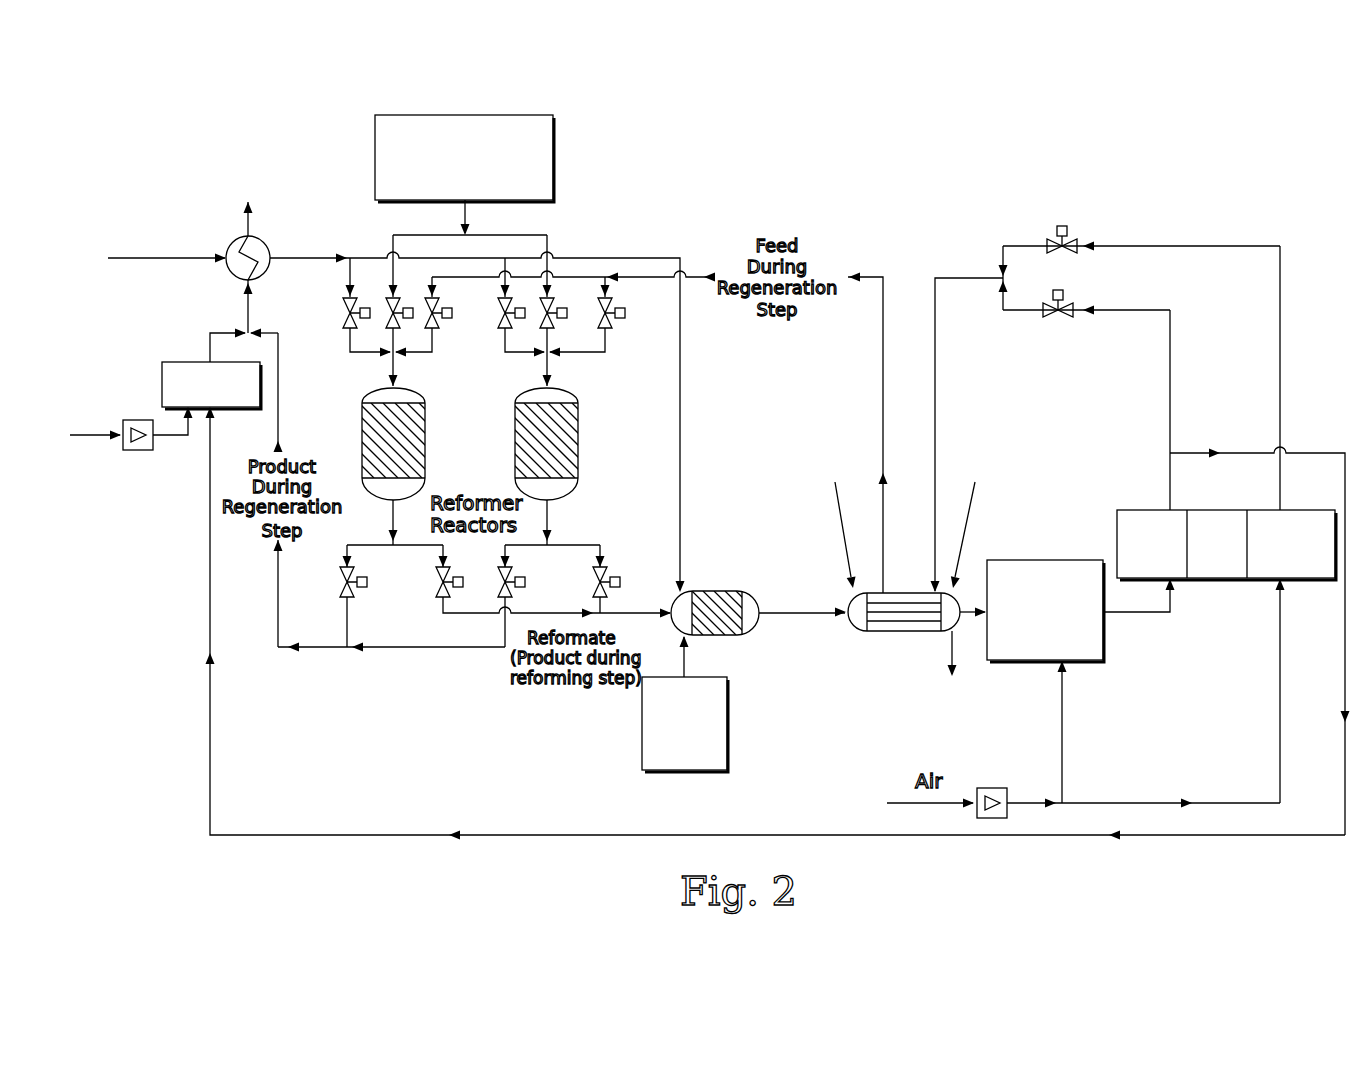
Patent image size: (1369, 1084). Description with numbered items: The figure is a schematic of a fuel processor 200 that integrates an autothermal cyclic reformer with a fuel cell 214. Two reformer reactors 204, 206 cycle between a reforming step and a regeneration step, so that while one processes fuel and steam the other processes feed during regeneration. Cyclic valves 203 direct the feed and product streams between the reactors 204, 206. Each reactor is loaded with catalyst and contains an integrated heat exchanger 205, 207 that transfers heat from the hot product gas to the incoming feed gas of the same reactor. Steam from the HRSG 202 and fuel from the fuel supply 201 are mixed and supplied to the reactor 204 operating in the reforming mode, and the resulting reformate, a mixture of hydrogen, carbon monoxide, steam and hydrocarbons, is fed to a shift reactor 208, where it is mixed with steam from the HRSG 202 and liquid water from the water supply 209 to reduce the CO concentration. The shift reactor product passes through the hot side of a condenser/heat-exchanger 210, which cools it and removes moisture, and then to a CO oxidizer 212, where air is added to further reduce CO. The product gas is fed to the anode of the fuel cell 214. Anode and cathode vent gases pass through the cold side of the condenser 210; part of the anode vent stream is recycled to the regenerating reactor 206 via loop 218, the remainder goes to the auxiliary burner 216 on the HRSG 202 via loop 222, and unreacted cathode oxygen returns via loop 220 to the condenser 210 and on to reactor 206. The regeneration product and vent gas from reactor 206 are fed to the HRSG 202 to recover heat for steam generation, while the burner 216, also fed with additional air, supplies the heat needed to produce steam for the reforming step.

The fuel processor 200 is at (1095, 162).
The fuel supply 201 is at (553, 145).
The heat recovery steam generator (HRSG) 202 is at (230, 243).
The cyclic valves 203 is at (581, 256).
The reformer reactor 204 is at (390, 454).
The heat exchanger 205 is at (418, 450).
The reformer reactor 206 is at (543, 454).
The heat exchanger 207 is at (572, 450).
The shift reactor 208 is at (750, 583).
The water supply 209 is at (727, 706).
The condenser/heat-exchanger 210 is at (900, 590).
The CO oxidizer 212 is at (1020, 558).
The fuel cell 214 is at (1310, 510).
The auxiliary burner 216 is at (162, 372).
The loop 218 is at (1170, 325).
The loop 220 is at (1280, 268).
The loop 222 is at (1345, 835).